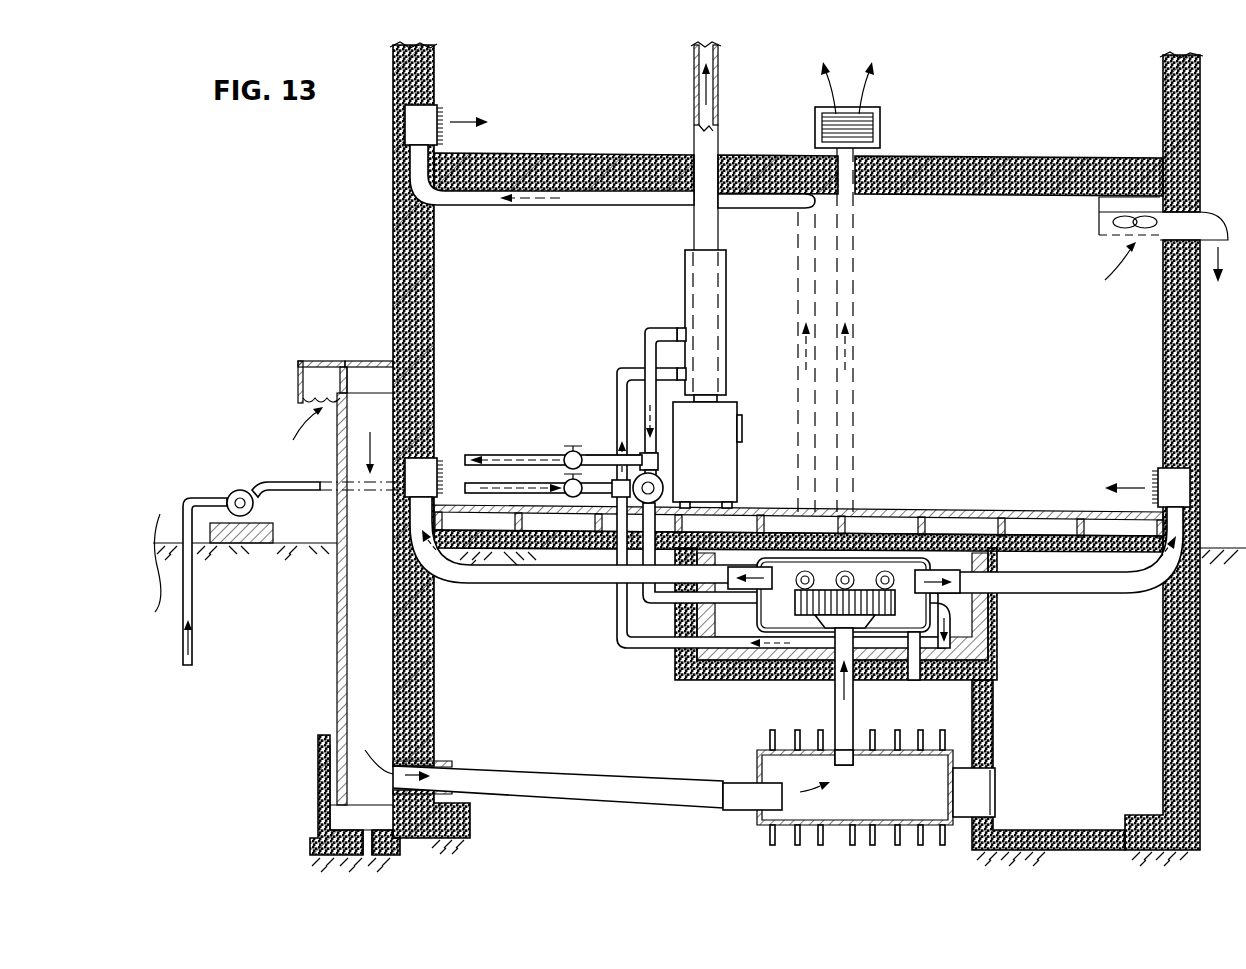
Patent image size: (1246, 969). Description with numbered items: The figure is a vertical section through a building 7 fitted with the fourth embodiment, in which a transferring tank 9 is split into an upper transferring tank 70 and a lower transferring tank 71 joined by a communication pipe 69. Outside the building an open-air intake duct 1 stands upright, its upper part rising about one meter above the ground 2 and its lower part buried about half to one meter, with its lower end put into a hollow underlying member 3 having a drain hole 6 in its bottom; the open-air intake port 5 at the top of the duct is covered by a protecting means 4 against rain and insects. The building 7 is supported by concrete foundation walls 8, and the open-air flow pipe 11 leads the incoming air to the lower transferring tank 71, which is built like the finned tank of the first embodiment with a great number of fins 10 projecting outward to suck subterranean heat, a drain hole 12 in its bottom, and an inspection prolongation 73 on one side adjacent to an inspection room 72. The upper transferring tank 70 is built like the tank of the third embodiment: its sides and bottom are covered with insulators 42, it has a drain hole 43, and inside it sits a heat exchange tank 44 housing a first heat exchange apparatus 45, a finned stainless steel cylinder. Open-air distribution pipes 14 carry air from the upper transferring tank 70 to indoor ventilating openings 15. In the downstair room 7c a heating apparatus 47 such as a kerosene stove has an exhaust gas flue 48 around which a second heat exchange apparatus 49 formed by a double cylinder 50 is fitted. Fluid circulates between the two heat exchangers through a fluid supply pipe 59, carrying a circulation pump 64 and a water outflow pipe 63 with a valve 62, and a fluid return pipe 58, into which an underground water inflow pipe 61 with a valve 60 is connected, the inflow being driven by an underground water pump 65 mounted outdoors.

The open-air intake duct 1 is at (337, 462).
The ground 2 is at (240, 576).
The hollow underlying member 3 is at (318, 790).
The protecting means 4 is at (330, 333).
The open-air intake port 5 is at (362, 368).
The drain hole 6 is at (368, 853).
The building 7 is at (393, 200).
The downstair room 7c is at (1029, 102).
The concrete foundation wall 8 is at (1163, 692).
The transferring tank 9 is at (736, 749).
The fins 10 is at (841, 847).
The open-air flow pipe 11 is at (656, 790).
The drain hole 12 is at (903, 830).
The open-air distribution pipes 14 is at (572, 200).
The indoor ventilating openings 15 is at (440, 116).
The insulators 42 is at (980, 610).
The drain hole 43 is at (913, 681).
The heat exchange tank 44 is at (768, 567).
The first heat exchange apparatus 45 is at (868, 591).
The heating apparatus 47 is at (740, 421).
The exhaust gas flue 48 is at (694, 216).
The second heat exchange apparatus 49 is at (726, 332).
The double cylinder 50 is at (726, 268).
The fluid return pipe 58 is at (617, 385).
The fluid supply pipe 59 is at (655, 369).
The valve 60 is at (566, 456).
The underground water inflow pipe 61 is at (516, 483).
The valve 62 is at (574, 446).
The water outflow pipe 63 is at (597, 455).
The circulation pump 64 is at (662, 488).
The underground water pump 65 is at (244, 491).
The communication pipe 69 is at (835, 712).
The upper transferring tank 70 is at (972, 654).
The lower transferring tank 71 is at (856, 832).
The inspection room 72 is at (1090, 812).
The inspection prolongation 73 is at (980, 792).